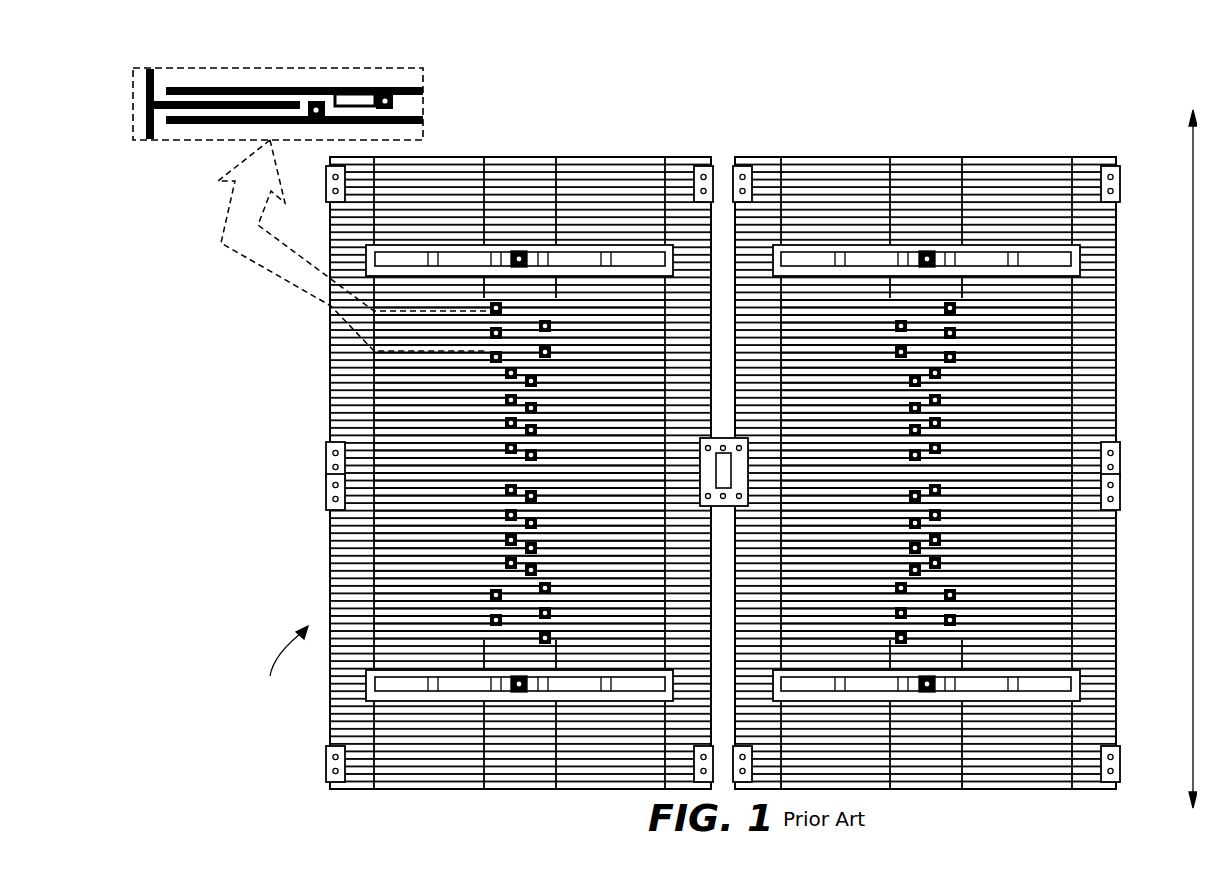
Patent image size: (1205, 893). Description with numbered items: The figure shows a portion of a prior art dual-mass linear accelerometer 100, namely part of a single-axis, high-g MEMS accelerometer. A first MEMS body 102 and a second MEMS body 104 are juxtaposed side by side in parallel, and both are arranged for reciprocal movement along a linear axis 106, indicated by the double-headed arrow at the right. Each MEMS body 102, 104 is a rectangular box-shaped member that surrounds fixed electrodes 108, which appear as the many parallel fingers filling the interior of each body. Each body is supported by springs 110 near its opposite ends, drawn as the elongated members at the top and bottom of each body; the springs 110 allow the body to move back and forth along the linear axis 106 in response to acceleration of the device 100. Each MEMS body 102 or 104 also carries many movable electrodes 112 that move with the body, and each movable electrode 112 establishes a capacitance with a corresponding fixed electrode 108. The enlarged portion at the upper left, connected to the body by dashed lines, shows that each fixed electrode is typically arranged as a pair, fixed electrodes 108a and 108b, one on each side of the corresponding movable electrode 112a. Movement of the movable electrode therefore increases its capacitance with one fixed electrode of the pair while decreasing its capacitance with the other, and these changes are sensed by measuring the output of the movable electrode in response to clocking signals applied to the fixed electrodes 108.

The dual-mass linear accelerometer 100 is at (272, 663).
The first MEMS body 102 is at (492, 782).
The second MEMS body 104 is at (1003, 782).
The linear axis 106 is at (1182, 147).
The fixed electrodes 108 is at (430, 495).
The fixed electrode 108a is at (198, 80).
The fixed electrode 108b is at (210, 116).
The springs 110 is at (622, 262).
The movable electrodes 112 is at (393, 585).
The movable electrode 112a is at (248, 93).